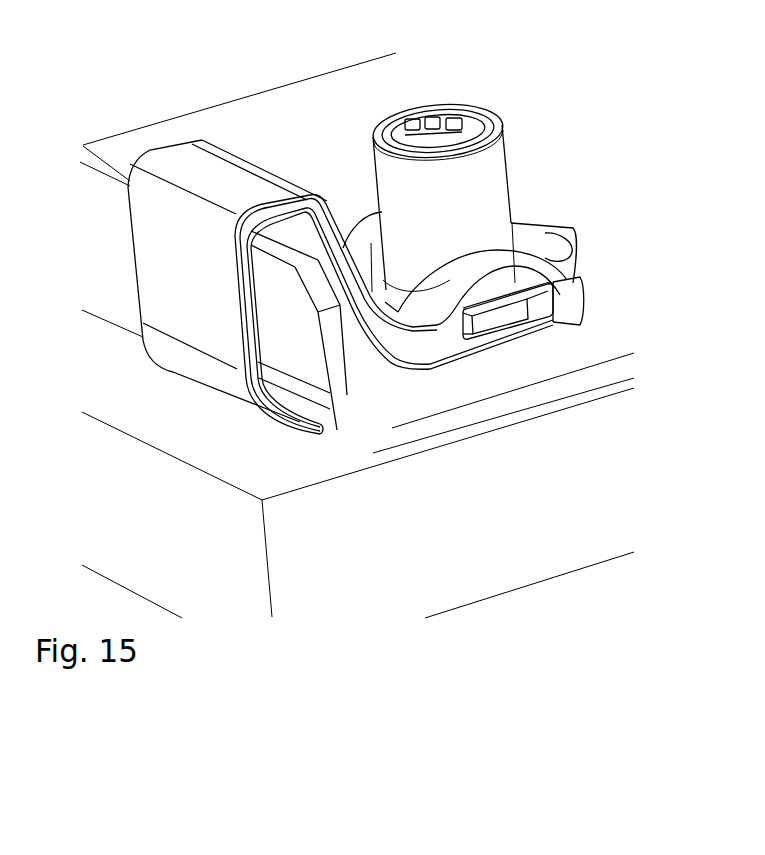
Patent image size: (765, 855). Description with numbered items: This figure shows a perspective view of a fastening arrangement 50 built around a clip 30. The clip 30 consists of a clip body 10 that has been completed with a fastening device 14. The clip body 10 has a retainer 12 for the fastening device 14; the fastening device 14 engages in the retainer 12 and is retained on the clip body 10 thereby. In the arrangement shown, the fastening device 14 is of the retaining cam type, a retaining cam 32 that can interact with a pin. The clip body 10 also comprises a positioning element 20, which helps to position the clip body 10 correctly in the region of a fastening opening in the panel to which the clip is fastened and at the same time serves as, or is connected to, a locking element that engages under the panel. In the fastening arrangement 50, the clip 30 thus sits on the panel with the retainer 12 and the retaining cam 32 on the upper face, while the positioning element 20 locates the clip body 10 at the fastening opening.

The clip body 10 is at (133, 252).
The retainer 12 is at (543, 318).
The fastening device 14 is at (497, 189).
The positioning element 20 is at (476, 314).
The clip 30 is at (312, 122).
The retaining cam 32 is at (500, 148).
The fastening arrangement 50 is at (366, 676).